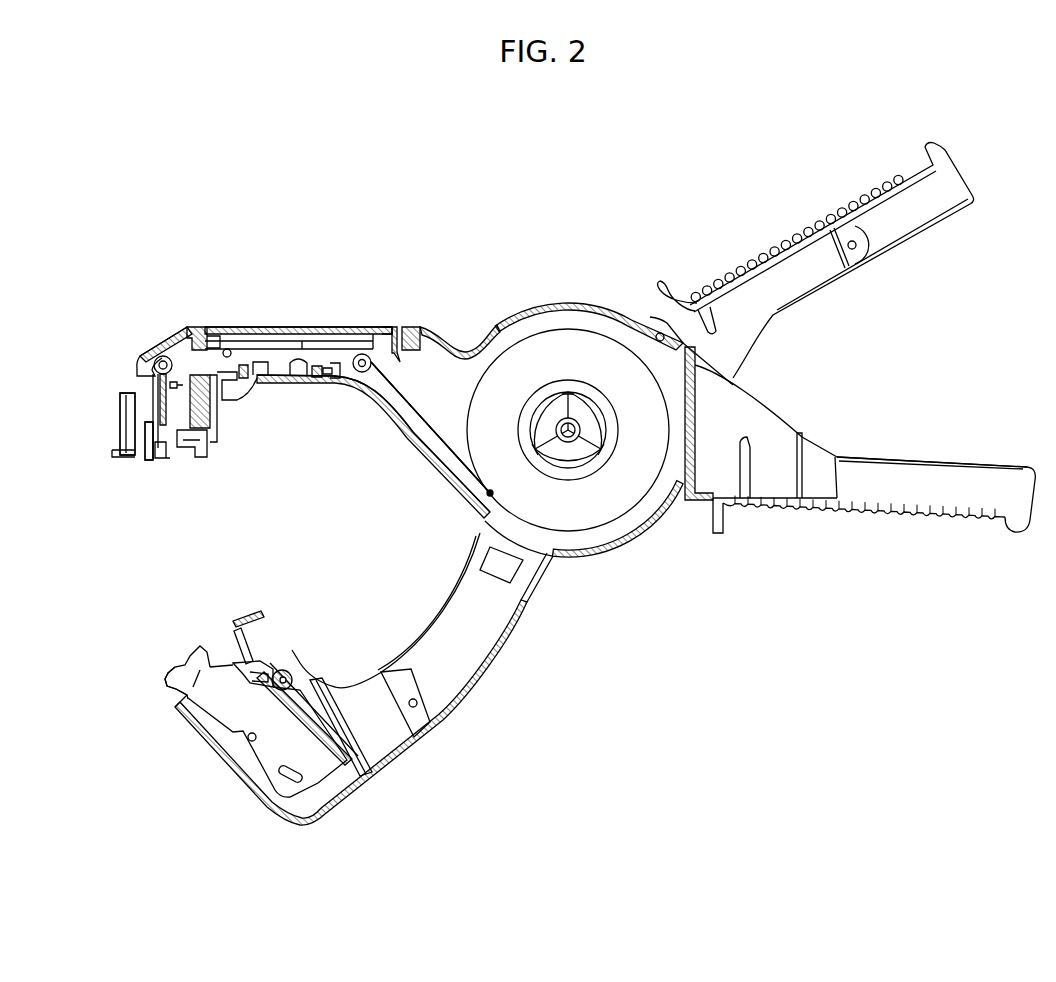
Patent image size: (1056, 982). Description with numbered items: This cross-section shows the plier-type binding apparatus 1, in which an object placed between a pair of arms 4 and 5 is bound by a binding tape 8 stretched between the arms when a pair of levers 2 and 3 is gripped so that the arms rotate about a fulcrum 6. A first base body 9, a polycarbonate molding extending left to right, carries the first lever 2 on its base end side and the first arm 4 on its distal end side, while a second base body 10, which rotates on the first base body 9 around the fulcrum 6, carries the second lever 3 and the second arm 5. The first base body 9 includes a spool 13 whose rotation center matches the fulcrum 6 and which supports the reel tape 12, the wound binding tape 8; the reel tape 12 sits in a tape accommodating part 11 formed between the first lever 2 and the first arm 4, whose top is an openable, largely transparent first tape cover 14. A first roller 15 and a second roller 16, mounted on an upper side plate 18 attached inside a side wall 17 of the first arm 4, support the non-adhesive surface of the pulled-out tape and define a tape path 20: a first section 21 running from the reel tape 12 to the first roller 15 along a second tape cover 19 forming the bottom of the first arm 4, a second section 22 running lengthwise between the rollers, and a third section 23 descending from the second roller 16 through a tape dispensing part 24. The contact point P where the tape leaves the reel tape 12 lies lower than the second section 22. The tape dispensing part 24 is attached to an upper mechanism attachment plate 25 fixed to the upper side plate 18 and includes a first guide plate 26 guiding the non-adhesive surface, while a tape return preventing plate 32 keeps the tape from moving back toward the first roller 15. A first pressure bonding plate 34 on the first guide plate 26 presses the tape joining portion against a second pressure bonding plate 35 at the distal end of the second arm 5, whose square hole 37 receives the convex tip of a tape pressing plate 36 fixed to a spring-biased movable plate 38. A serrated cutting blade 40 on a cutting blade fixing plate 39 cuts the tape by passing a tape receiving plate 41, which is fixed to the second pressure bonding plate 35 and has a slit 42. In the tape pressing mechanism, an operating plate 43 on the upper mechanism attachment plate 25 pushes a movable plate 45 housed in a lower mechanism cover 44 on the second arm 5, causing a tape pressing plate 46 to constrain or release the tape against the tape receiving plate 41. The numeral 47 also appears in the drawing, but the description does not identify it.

The binding apparatus 1 is at (772, 657).
The first lever 2 is at (940, 523).
The second lever 3 is at (866, 196).
The first arm 4 is at (363, 323).
The second arm 5 is at (447, 722).
The fulcrum 6 is at (580, 437).
The binding tape 8 is at (430, 428).
The first base body 9 is at (987, 445).
The second base body 10 is at (940, 237).
The tape accommodating part 11 is at (598, 555).
The reel tape 12 is at (572, 345).
The spool 13 is at (603, 432).
The first tape cover 14 is at (518, 313).
The first roller 15 is at (382, 332).
The second roller 16 is at (143, 362).
The side wall 17 is at (333, 327).
The upper side plate 18 is at (280, 372).
The second tape cover 19 is at (452, 482).
The tape path 20 is at (410, 387).
The first section 21 is at (416, 413).
The second section 22 is at (316, 365).
The third section 23 is at (150, 383).
The tape dispensing part 24 is at (140, 465).
The upper mechanism attachment plate 25 is at (168, 447).
The first guide plate 26 is at (134, 412).
The tape return preventing plate 32 is at (212, 346).
The first pressure bonding plate 34 is at (213, 417).
The second pressure bonding plate 35 is at (262, 608).
The tape pressing plate 36 is at (194, 455).
The square hole 37 is at (247, 615).
The movable plate 38 is at (170, 368).
The cutting blade fixing plate 39 is at (152, 357).
The cutting blade 40 is at (152, 461).
The tape receiving plate 41 is at (236, 638).
The slit 42 is at (232, 655).
The operating plate 43 is at (130, 425).
The lower mechanism cover 44 is at (318, 818).
The movable plate 45 is at (196, 648).
The tape pressing plate 46 is at (178, 668).
The guide rail 47 is at (278, 327).
The contact point P is at (473, 530).